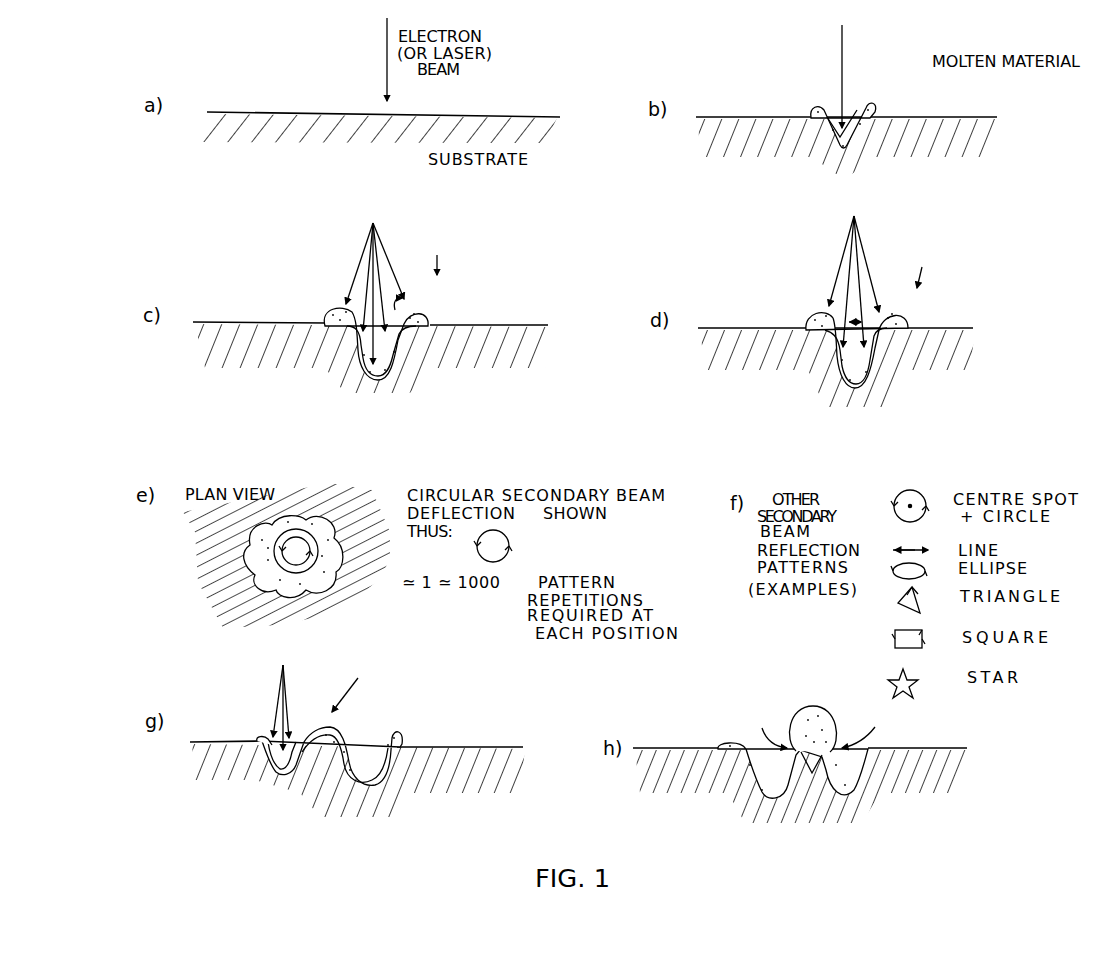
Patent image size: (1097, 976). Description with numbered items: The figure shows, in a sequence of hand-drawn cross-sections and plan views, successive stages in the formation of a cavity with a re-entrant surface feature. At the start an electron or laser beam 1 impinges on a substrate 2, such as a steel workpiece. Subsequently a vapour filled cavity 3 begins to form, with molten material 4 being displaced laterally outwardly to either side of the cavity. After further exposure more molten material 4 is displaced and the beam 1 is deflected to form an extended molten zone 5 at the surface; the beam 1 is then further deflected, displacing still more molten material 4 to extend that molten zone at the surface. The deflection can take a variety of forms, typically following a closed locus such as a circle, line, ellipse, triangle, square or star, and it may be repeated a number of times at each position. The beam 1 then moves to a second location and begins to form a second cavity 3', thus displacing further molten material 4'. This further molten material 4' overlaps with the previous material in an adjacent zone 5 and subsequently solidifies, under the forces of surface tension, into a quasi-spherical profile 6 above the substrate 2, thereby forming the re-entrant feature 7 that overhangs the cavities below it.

The electron or laser beam 1 is at (387, 53).
The substrate 2 is at (490, 113).
The vapour filled cavity 3 is at (594, 420).
The second cavity 3' is at (253, 727).
The molten material 4 is at (606, 443).
The further molten material 4' is at (236, 732).
The extended molten zone 5 is at (639, 470).
The quasi-spherical profile 6 is at (805, 693).
The re-entrant feature 7 is at (817, 728).